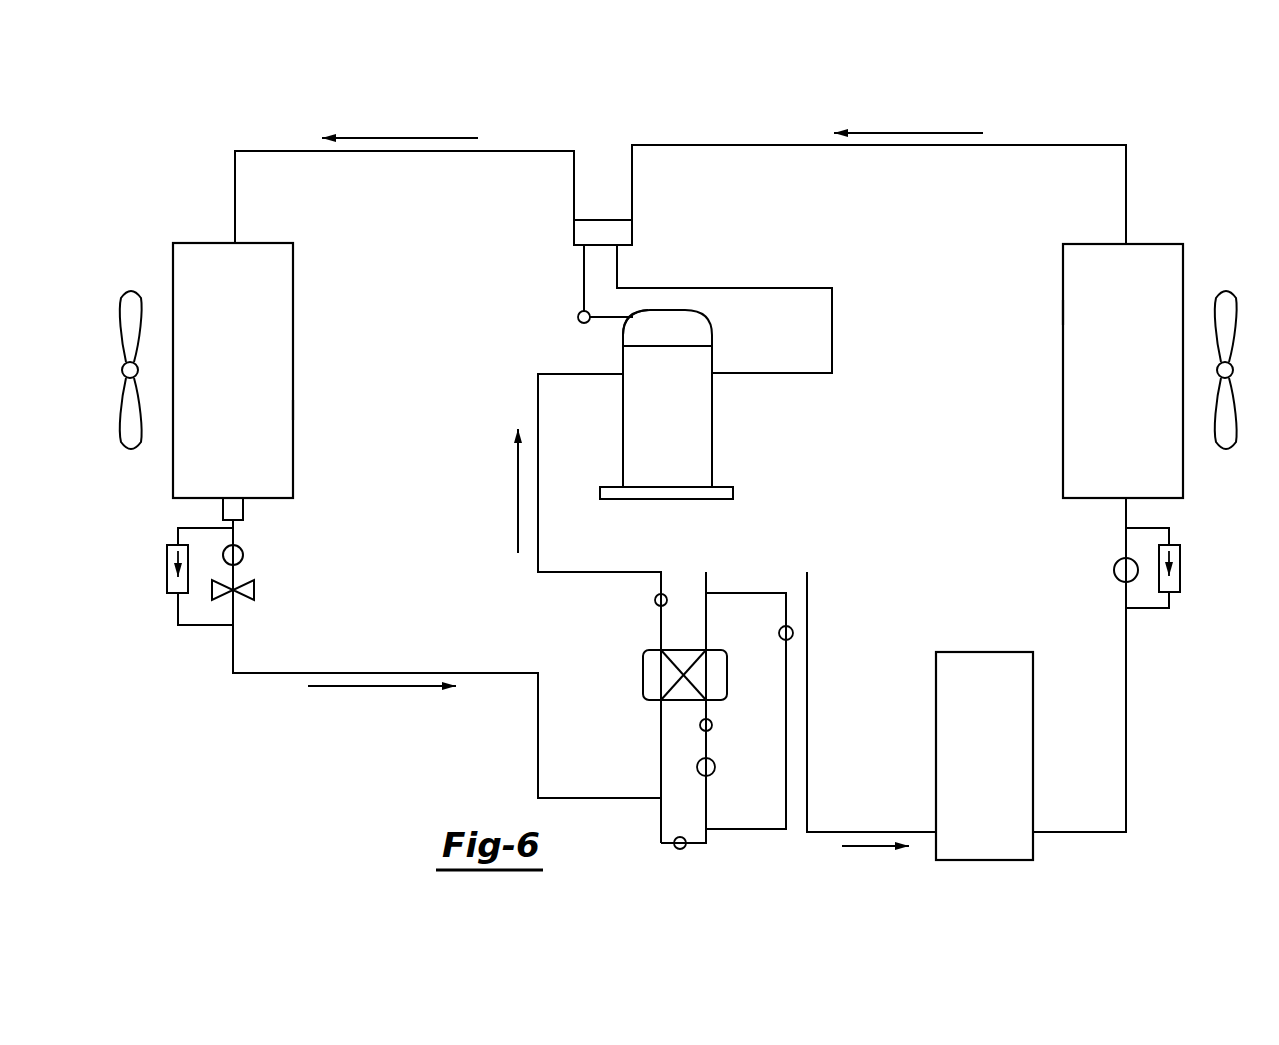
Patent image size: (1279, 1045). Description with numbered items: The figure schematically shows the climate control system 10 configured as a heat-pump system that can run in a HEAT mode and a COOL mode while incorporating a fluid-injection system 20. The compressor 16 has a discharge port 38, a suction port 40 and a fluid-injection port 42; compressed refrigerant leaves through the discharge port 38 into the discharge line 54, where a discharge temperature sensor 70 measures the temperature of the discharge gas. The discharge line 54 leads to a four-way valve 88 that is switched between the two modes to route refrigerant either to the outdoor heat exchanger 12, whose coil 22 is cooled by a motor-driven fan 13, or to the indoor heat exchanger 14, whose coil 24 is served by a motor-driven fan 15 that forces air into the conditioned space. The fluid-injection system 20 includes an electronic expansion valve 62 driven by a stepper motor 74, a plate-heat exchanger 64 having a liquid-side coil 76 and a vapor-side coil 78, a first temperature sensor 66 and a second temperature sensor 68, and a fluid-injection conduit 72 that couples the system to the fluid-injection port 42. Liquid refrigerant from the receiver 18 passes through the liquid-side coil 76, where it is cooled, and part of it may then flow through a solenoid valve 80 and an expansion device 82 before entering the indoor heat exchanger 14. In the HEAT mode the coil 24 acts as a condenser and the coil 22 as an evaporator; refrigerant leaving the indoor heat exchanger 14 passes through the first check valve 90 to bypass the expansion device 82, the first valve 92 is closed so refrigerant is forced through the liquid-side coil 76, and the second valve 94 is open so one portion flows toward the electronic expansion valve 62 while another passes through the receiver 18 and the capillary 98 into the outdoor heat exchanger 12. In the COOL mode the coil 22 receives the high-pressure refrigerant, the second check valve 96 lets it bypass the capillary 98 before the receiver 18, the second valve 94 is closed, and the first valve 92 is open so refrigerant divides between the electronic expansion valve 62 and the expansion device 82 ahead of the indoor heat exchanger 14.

The climate control system 10 is at (887, 112).
The outdoor heat exchanger 12 is at (1050, 397).
The motor-driven fan 13 is at (1235, 362).
The indoor heat exchanger 14 is at (310, 355).
The motor-driven fan 15 is at (123, 376).
The compressor 16 is at (736, 457).
The receiver 18 is at (996, 652).
The fluid-injection system 20 is at (578, 690).
The coil 22 is at (1063, 313).
The coil 24 is at (293, 410).
The discharge port 38 is at (640, 320).
The suction port 40 is at (712, 372).
The fluid-injection port 42 is at (623, 373).
The discharge line 54 is at (584, 263).
The electronic expansion valve 62 is at (714, 785).
The plate-heat exchanger 64 is at (720, 642).
The first temperature sensor 66 is at (713, 725).
The second temperature sensor 68 is at (667, 598).
The discharge temperature sensor 70 is at (580, 324).
The fluid-injection conduit 72 is at (538, 563).
The stepper motor 74 is at (716, 763).
The liquid-side coil 76 is at (708, 656).
The vapor-side coil 78 is at (662, 660).
The solenoid valve 80 is at (255, 590).
The expansion device 82 is at (244, 555).
The four-way valve 88 is at (600, 220).
The first check valve 90 is at (167, 571).
The first valve 92 is at (687, 846).
The second valve 94 is at (794, 636).
The second check valve 96 is at (1180, 568).
The expansion device or capillary 98 is at (1114, 570).